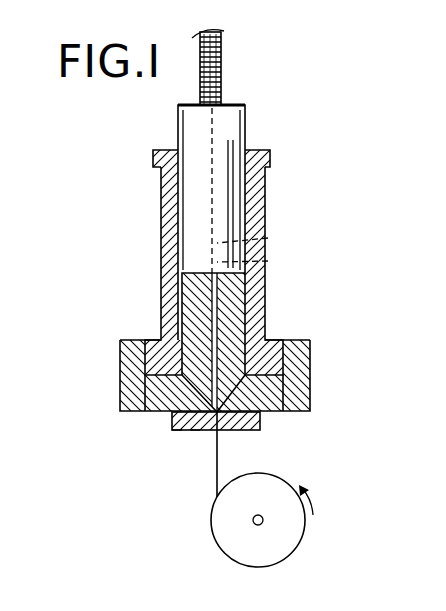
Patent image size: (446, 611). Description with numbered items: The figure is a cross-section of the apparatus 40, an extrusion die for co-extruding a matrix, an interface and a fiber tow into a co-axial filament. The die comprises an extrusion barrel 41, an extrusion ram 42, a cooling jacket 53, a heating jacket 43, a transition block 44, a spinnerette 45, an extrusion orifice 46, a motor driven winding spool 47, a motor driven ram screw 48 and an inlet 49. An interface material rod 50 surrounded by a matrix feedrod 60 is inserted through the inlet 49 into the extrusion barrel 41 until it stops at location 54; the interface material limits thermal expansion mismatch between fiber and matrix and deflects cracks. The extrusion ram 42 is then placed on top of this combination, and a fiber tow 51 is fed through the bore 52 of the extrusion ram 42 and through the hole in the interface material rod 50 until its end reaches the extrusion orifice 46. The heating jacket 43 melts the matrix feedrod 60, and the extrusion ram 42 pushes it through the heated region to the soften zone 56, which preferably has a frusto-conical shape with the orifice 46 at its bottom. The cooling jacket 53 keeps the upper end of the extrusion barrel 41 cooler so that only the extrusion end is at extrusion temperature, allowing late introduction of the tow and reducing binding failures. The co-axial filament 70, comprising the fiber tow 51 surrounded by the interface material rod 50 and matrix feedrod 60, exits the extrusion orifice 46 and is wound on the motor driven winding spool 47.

The apparatus 40 is at (114, 193).
The extrusion barrel 41 is at (255, 330).
The extrusion ram 42 is at (233, 218).
The heating jacket 43 is at (300, 365).
The transition block 44 is at (270, 412).
The spinnerette 45 is at (180, 430).
The extrusion orifice 46 is at (220, 428).
The motor driven winding spool 47 is at (288, 542).
The motor driven ram screw 48 is at (221, 73).
The inlet 49 is at (242, 168).
The interface material rod 50 is at (207, 293).
The fiber tow 51 is at (268, 261).
The bore 52 is at (268, 238).
The cooling jacket 53 is at (265, 190).
The location 54 is at (178, 400).
The soften zone 56 is at (195, 430).
The matrix feedrod 60 is at (192, 317).
The co-axial filament 70 is at (213, 478).